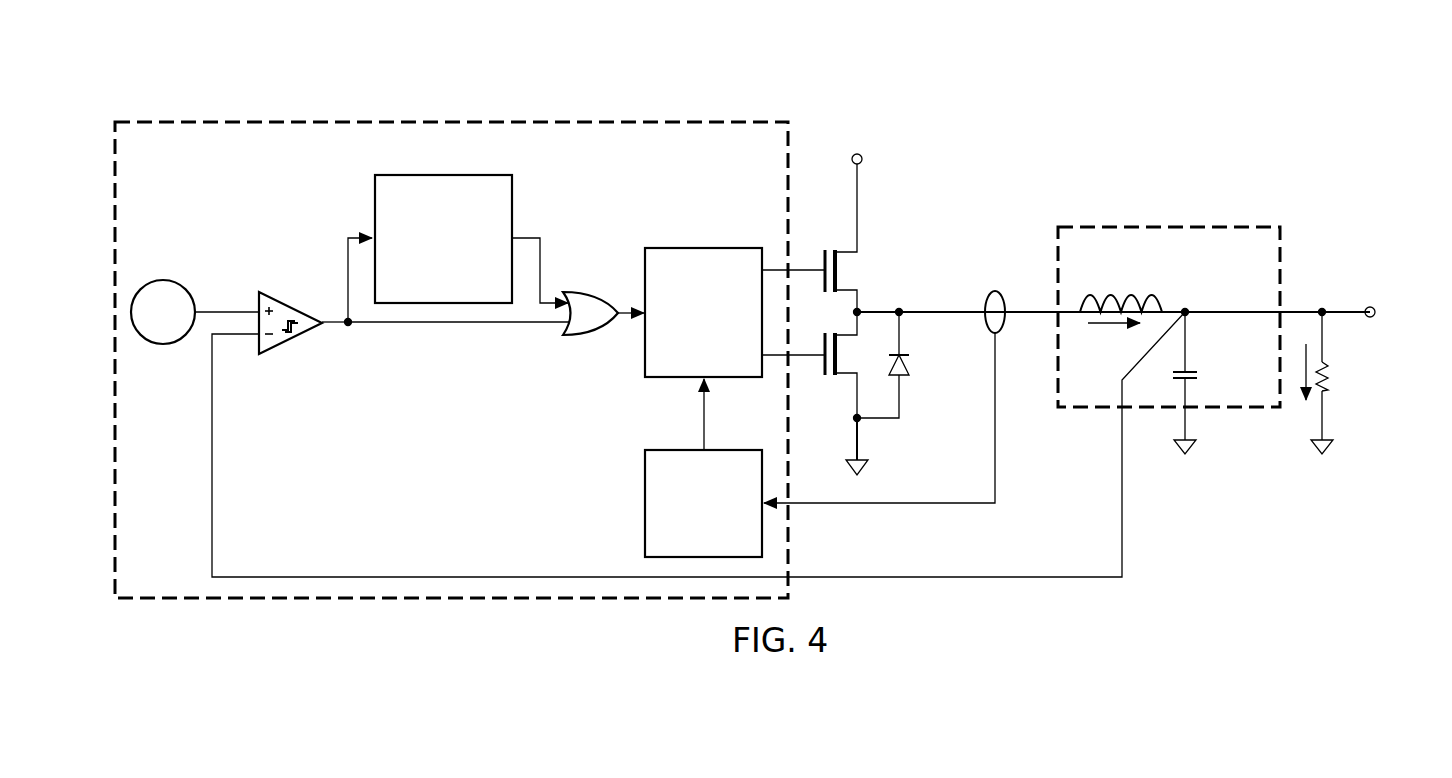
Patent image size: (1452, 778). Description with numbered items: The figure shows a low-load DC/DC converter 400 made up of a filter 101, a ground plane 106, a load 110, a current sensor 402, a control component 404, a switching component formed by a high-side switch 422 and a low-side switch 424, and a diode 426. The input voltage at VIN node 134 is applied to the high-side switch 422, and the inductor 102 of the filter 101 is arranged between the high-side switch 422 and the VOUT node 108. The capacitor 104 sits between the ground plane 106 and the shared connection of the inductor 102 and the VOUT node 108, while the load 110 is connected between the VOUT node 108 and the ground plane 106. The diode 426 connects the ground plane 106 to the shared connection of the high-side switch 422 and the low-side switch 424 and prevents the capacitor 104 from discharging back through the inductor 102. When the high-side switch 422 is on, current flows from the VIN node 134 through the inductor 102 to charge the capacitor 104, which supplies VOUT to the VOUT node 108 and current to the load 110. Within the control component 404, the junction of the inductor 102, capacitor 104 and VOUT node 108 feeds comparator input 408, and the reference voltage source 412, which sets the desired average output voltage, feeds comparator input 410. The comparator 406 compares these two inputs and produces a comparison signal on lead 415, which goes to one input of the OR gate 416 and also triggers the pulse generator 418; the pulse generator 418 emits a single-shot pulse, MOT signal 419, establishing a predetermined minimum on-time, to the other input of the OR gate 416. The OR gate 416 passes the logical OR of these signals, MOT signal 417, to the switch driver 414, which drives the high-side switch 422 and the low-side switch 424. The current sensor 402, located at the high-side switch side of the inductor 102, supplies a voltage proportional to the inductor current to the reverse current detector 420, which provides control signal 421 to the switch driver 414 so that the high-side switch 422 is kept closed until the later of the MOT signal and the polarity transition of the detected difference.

The DC/DC converter 400 is at (1172, 90).
The control component 404 is at (449, 119).
The reference voltage source 412 is at (171, 282).
The comparator input 410 is at (237, 308).
The comparator 406 is at (290, 304).
The comparator input 408 is at (236, 337).
The comparison signal 415 is at (397, 326).
The pulse generator 418 is at (374, 217).
The MOT signal 419 is at (529, 235).
The OR gate 416 is at (586, 292).
The MOT signal 417 is at (623, 326).
The switch driver 414 is at (692, 248).
The control signal 421 is at (703, 413).
The reverse current detector 420 is at (645, 510).
The VIN node 134 is at (862, 158).
The high-side switch 422 is at (814, 250).
The low-side switch 424 is at (816, 370).
The diode 426 is at (910, 359).
The ground plane 106 is at (863, 470).
The current sensor 402 is at (999, 334).
The filter 101 is at (1172, 222).
The inductor 102 is at (1153, 300).
The capacitor 104 is at (1198, 375).
The VOUT node 108 is at (1373, 306).
The load 110 is at (1330, 376).